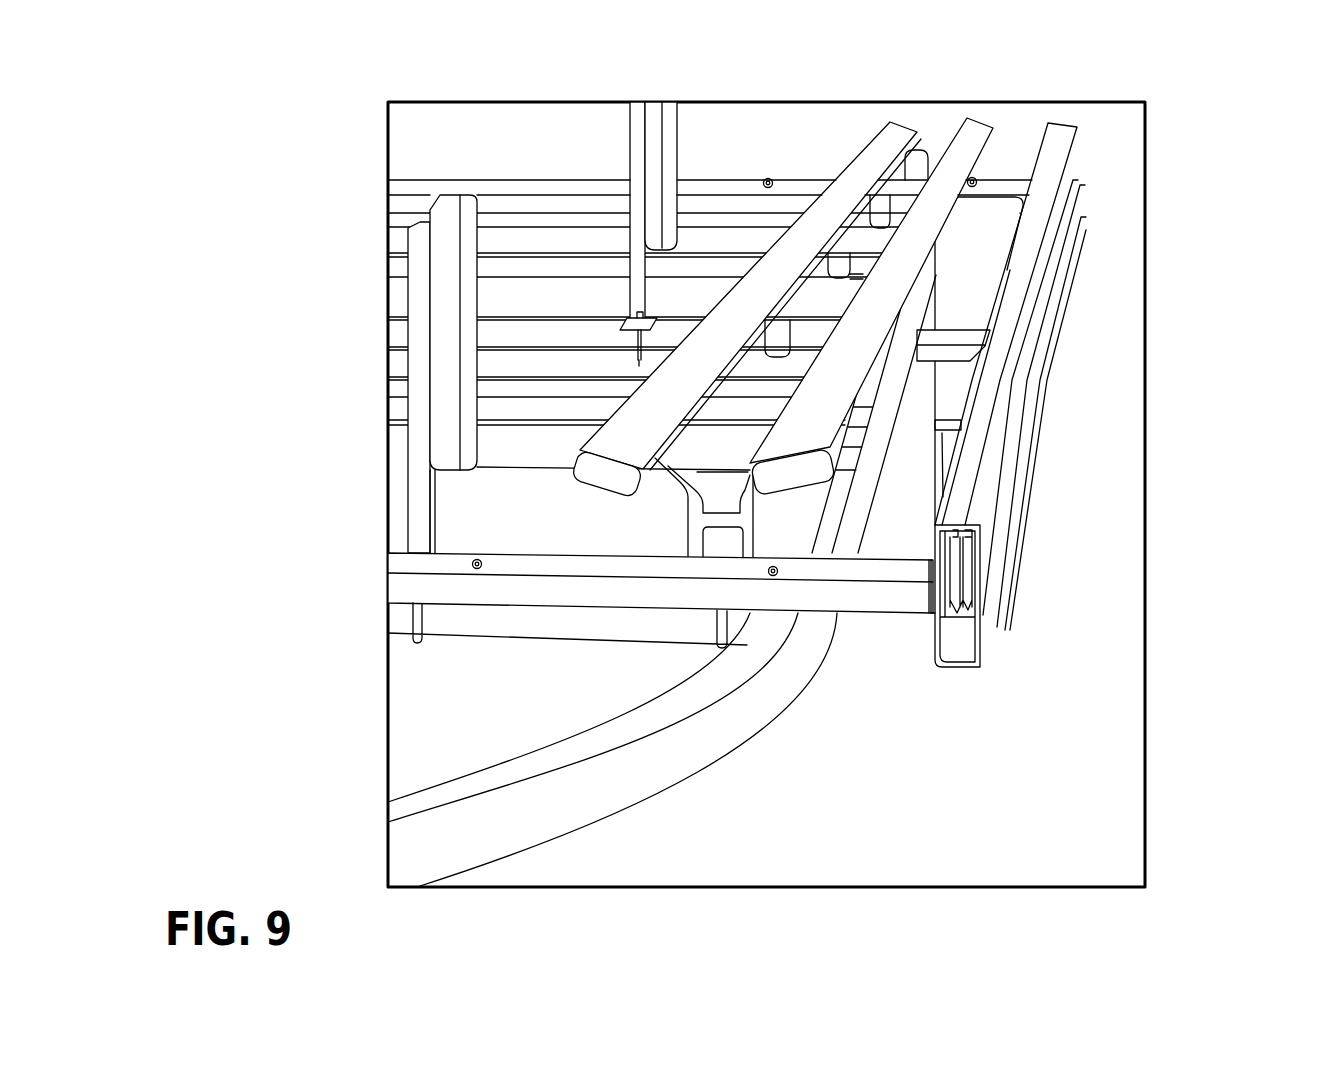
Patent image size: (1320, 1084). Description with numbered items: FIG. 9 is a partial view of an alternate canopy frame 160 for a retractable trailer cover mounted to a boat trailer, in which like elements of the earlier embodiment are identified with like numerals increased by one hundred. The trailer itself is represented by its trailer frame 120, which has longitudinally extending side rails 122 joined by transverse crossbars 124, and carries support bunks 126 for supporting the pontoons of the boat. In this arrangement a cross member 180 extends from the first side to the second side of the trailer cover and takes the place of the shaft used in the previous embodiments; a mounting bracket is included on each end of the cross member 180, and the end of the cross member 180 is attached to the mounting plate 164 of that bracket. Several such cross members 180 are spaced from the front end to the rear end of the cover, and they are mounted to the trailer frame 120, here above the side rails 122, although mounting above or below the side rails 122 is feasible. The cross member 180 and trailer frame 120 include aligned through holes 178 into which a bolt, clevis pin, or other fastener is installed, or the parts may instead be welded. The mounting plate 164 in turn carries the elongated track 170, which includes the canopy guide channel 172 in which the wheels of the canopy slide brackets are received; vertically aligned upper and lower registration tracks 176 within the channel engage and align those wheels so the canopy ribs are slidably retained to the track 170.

The trailer frame 120 is at (598, 815).
The side rails 122 is at (897, 404).
The transverse crossbars 124 is at (517, 626).
The support bunks 126 is at (962, 130).
The canopy frame 160 is at (1073, 121).
The mounting plate 164 is at (930, 600).
The track 170 is at (1015, 327).
The canopy guide channel 172 is at (953, 563).
The registration tracks 176 is at (965, 525).
The through holes 178 is at (768, 178).
The cross member 180 is at (717, 187).